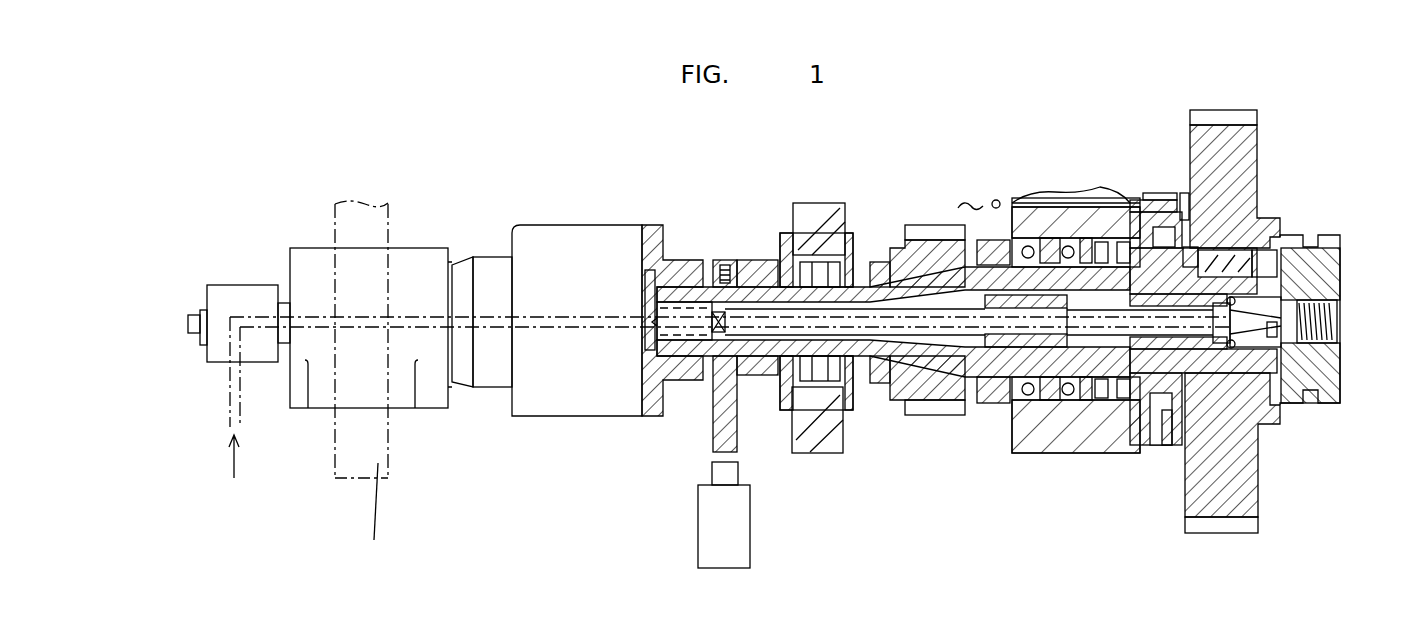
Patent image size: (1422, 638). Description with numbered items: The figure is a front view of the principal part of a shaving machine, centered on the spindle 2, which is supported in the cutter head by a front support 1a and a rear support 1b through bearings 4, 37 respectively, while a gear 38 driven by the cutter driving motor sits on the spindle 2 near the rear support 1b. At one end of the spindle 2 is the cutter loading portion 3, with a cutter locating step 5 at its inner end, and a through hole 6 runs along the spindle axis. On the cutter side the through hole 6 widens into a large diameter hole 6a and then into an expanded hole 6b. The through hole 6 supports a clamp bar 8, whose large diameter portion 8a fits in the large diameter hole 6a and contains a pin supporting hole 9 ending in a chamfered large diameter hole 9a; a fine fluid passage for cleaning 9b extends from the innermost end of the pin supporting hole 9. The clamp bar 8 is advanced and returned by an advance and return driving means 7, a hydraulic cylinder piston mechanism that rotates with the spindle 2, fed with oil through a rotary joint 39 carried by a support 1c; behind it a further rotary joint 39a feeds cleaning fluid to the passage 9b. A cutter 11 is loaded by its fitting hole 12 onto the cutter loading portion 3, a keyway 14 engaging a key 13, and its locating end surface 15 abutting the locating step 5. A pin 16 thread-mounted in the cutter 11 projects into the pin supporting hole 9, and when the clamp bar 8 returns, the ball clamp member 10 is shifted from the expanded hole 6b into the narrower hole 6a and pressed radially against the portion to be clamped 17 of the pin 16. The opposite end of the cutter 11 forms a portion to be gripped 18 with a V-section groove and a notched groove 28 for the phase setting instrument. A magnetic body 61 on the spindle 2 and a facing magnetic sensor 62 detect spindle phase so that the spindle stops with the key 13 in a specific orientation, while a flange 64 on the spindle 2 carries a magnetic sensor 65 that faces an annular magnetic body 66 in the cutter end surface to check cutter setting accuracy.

The front support 1a is at (1070, 193).
The rear support 1b is at (830, 210).
The support 1c is at (372, 515).
The spindle 2 is at (887, 372).
The cutter loading portion 3 is at (1255, 475).
The bearing 4 is at (1060, 402).
The cutter locating step 5 is at (1207, 325).
The through hole 6 is at (788, 405).
The large diameter hole 6a is at (997, 392).
The expanded hole 6b is at (1250, 365).
The advance and return driving means 7 is at (583, 243).
The clamp bar 8 is at (878, 285).
The large diameter portion 8a is at (1042, 240).
The pin supporting hole 9 is at (1127, 405).
The large diameter hole 9a is at (1222, 360).
The fine fluid passage for cleaning 9b is at (563, 327).
The clamp member 10 is at (1340, 284).
The cutter 11 is at (1243, 523).
The fitting hole 12 is at (1242, 340).
The key 13 is at (1237, 255).
The keyway 14 is at (1200, 248).
The locating end surface 15 is at (1165, 445).
The pin 16 is at (1137, 225).
The portion to be clamped 17 is at (1338, 378).
The portion to be gripped 18 is at (1318, 398).
The notched groove 28 is at (1342, 240).
The bearing 37 is at (790, 248).
The gear 38 is at (955, 223).
The rotary joint 39 is at (418, 265).
The rotary joint 39a is at (256, 300).
The magnetic body 61 is at (717, 420).
The magnetic sensor 62 is at (733, 552).
The flange 64 is at (1182, 200).
The magnetic sensor 65 is at (1160, 205).
The magnetic body 66 is at (1215, 228).